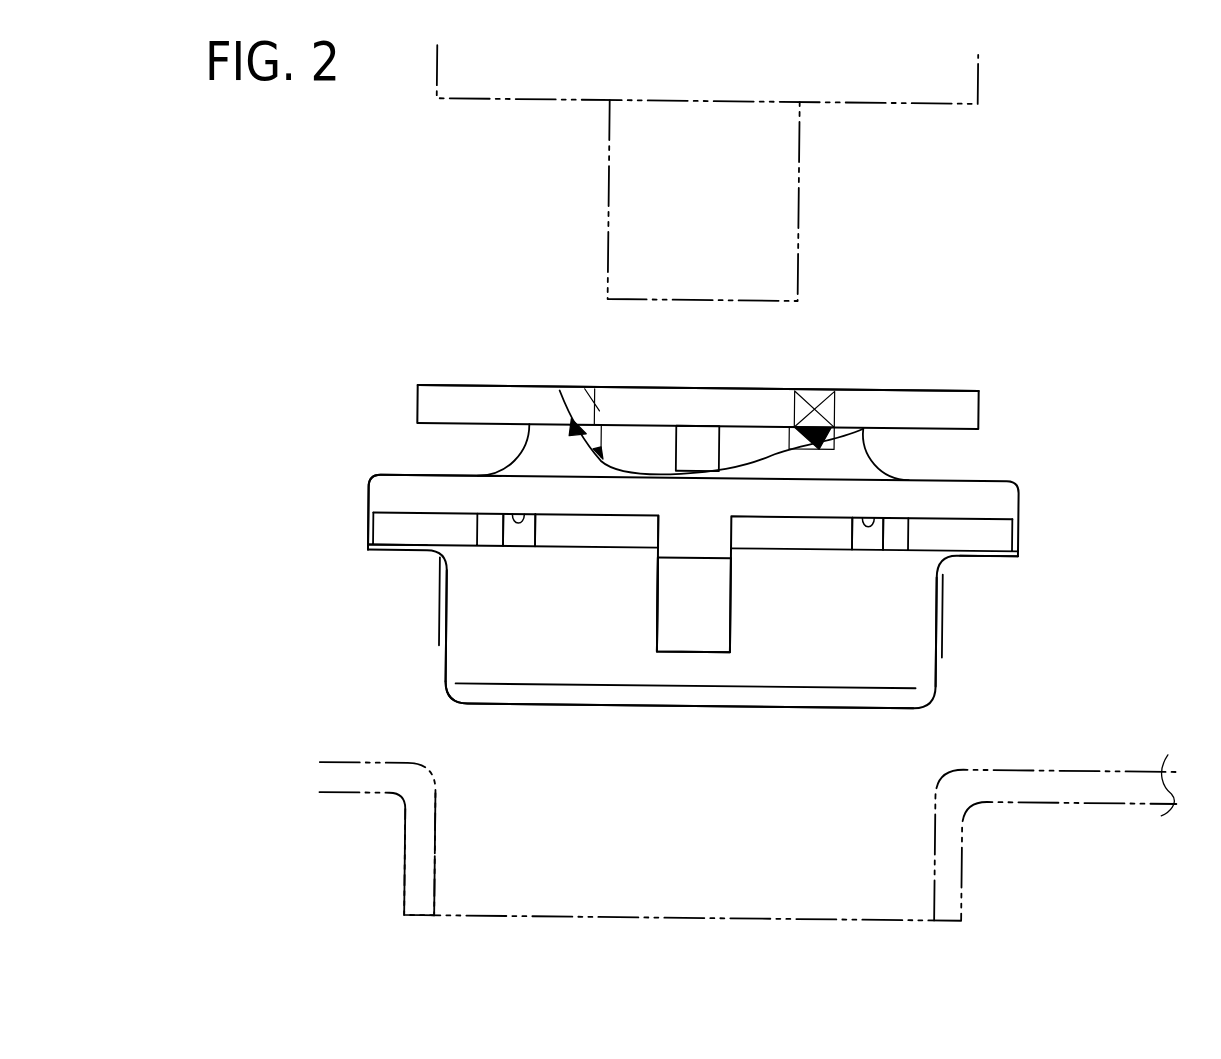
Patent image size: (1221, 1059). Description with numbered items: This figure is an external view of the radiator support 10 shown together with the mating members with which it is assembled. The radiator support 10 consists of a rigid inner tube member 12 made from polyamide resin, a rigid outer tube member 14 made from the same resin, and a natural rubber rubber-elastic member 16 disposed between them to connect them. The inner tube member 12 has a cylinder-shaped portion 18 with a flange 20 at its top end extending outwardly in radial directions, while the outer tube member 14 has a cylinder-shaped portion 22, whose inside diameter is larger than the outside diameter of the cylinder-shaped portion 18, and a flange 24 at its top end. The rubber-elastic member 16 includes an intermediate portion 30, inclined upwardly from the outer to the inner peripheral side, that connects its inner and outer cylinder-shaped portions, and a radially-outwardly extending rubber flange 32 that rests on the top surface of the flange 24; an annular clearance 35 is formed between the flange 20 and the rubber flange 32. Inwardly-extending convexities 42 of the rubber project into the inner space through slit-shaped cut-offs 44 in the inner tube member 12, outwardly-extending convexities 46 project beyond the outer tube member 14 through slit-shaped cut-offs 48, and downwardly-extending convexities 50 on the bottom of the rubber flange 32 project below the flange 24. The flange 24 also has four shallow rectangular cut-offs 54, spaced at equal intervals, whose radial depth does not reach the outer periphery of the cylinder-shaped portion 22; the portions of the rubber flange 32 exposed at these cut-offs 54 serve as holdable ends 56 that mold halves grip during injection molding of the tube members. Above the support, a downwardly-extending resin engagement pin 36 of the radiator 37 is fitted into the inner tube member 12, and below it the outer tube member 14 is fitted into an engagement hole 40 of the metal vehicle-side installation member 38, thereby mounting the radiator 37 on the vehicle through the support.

The radiator support 10 is at (1013, 352).
The rigid inner tube member 12 is at (935, 391).
The rigid outer tube member 14 is at (940, 672).
The rubber-elastic member 16 is at (1018, 492).
The cylinder-shaped portion 18 is at (610, 388).
The flange 20 is at (447, 400).
The cylinder-shaped portion 22 is at (468, 664).
The flange 24 is at (380, 524).
The intermediate portion 30 is at (530, 452).
The rubber flange 32 is at (398, 485).
The annular clearance 35 is at (872, 444).
The engagement pin 36 is at (640, 180).
The radiator 37 is at (813, 81).
The vehicle-side installation member 38 is at (1049, 803).
The engagement hole 40 is at (436, 860).
The inwardly-extending convexities 42 is at (703, 442).
The slit-shaped cut-offs 44 is at (620, 448).
The outwardly-extending convexities 46 is at (442, 618).
The slit-shaped cut-offs 48 is at (730, 596).
The downwardly-extending convexities 50 is at (383, 558).
The cut-offs 54 is at (540, 547).
The holdable ends 56 is at (515, 522).